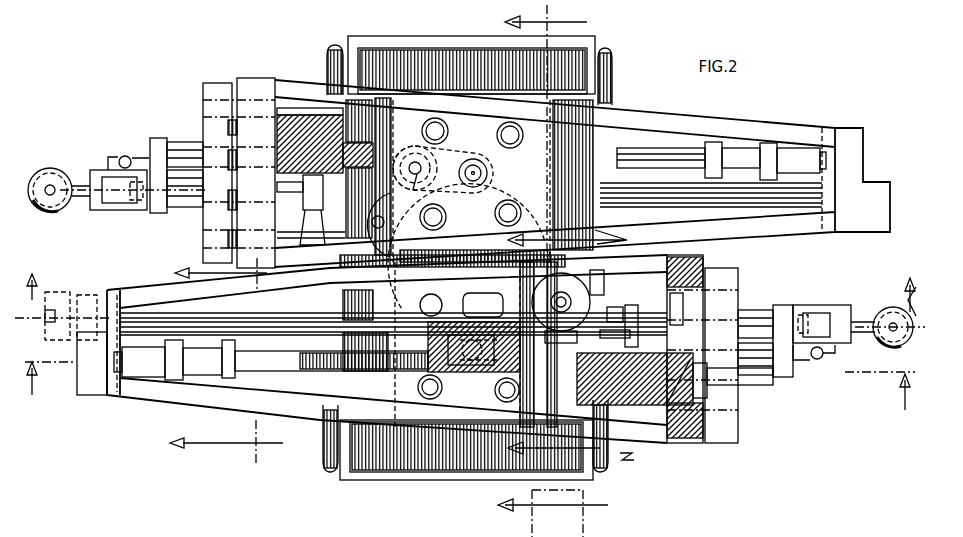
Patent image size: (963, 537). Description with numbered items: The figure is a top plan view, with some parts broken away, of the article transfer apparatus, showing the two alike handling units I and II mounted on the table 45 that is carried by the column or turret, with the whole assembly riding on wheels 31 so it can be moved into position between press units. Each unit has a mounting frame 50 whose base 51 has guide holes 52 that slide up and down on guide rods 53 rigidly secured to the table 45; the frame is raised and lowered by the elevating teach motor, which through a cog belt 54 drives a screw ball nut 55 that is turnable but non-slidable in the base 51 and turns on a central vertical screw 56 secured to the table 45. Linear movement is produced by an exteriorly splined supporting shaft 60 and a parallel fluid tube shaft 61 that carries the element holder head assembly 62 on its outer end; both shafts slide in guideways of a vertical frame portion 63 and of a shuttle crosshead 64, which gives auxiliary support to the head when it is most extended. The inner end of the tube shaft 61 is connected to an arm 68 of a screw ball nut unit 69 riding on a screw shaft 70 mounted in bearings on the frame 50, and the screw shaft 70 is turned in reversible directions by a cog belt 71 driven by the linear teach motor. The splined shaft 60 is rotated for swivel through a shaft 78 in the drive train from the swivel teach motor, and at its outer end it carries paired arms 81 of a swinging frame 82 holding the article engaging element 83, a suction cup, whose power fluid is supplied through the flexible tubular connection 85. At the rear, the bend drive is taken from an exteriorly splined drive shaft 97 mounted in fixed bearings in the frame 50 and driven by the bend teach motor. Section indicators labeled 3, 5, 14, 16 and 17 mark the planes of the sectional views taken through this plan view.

The wheels 31 is at (335, 50).
The table 45 is at (400, 457).
The mounting frame 50 is at (305, 80).
The base 51 is at (506, 119).
The guide holes 52 is at (424, 131).
The guide rods 53 is at (498, 134).
The cog belt 54 is at (442, 160).
The screw ball nut 55 is at (484, 171).
The central vertical screw 56 is at (486, 178).
The splined supporting rod or shaft 60 is at (622, 183).
The fluid rod, tube, or shaft 61 is at (172, 142).
The element holder head assembly 62 is at (160, 214).
The vertical frame portion 63 is at (255, 78).
The shuttle crosshead 64 is at (219, 72).
The arm or projection 68 is at (237, 352).
The screw ball nut unit 69 is at (771, 145).
The screw shaft 70 is at (623, 153).
The cog belt 71 is at (230, 128).
The shaft 78 is at (667, 315).
The paired arms 81 is at (824, 305).
The swinging frame 82 is at (80, 206).
The article engaging element 83 is at (50, 170).
The flexible tubular connection 85 is at (127, 156).
The exteriorly splined drive shaft 97 is at (667, 207).
The section line 3- 3 is at (471, 404).
The section line 5- 5 is at (559, 271).
The section line 14- 14 is at (471, 285).
The section line 16- 16 is at (627, 222).
The section line 17- 17 is at (213, 361).